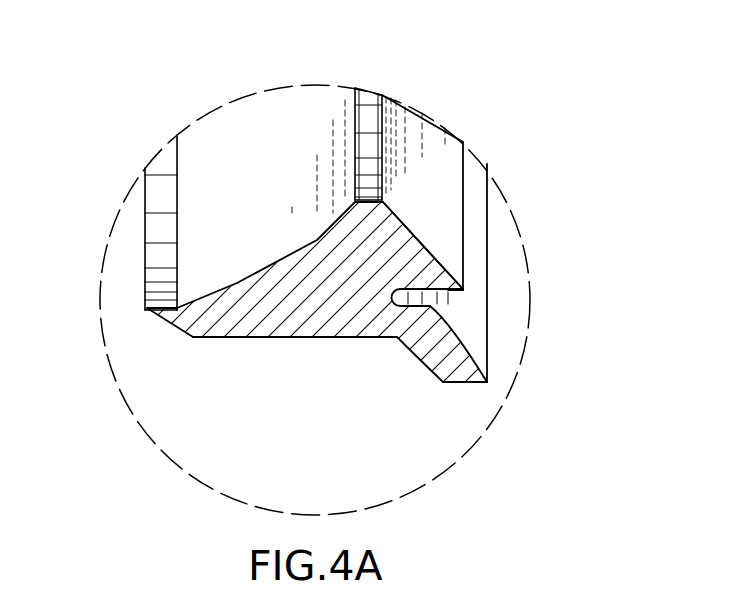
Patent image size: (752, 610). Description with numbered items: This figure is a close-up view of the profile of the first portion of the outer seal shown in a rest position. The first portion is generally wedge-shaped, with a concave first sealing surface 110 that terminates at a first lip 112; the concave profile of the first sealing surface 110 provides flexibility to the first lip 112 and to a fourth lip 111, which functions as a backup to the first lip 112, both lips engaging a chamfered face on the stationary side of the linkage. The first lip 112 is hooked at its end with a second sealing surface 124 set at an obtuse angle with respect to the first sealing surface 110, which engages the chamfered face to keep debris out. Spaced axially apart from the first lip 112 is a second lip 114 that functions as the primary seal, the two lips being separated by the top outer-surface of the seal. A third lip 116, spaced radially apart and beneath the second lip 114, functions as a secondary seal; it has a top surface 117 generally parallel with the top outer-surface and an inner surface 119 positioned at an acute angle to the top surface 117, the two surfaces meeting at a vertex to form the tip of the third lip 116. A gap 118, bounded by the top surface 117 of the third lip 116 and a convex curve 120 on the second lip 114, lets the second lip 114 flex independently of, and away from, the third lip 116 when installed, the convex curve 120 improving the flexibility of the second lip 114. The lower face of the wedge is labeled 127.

The first sealing surface 110 is at (281, 258).
The fourth lip 111 is at (368, 203).
The first lip 112 is at (192, 322).
The second lip 114 is at (443, 360).
The third lip 116 is at (445, 284).
The top surface 117 is at (423, 287).
The gap 118 is at (445, 307).
The inner surface 119 is at (417, 241).
The convex curve 120 is at (450, 337).
The second sealing surface 124 is at (163, 307).
The bottom face 127 is at (303, 338).